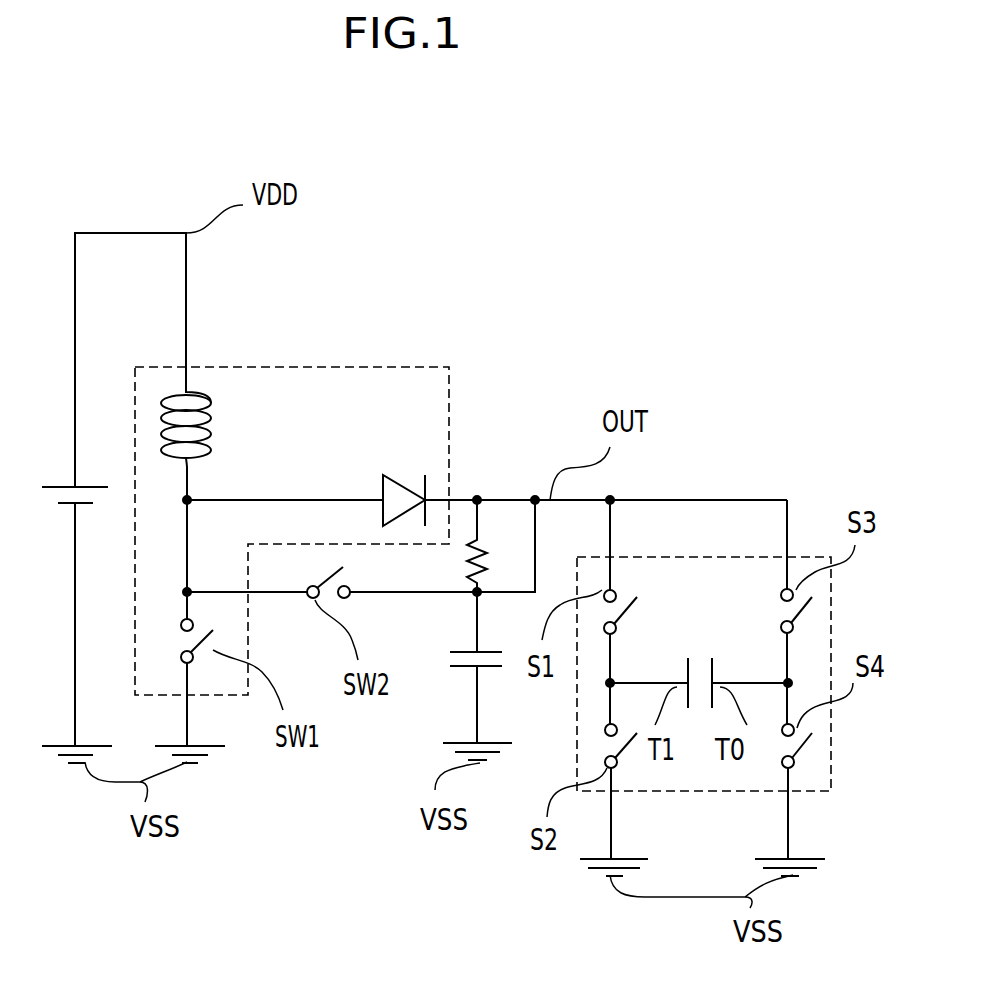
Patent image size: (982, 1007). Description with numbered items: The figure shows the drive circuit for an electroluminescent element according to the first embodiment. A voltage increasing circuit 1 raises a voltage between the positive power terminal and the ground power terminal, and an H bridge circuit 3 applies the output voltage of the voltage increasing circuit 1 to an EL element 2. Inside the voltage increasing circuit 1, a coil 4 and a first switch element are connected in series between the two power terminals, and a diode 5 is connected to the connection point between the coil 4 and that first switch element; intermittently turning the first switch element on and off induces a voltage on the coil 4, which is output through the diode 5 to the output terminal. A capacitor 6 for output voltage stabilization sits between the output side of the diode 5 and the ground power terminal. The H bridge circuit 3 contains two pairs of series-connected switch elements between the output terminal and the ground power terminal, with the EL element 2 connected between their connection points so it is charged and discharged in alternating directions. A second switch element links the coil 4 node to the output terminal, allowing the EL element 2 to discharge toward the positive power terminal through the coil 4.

The voltage increasing circuit 1 is at (322, 364).
The EL element 2 is at (712, 660).
The H bridge circuit 3 is at (742, 791).
The coil 4 is at (213, 457).
The diode 5 is at (390, 475).
The capacitor 6 is at (457, 670).